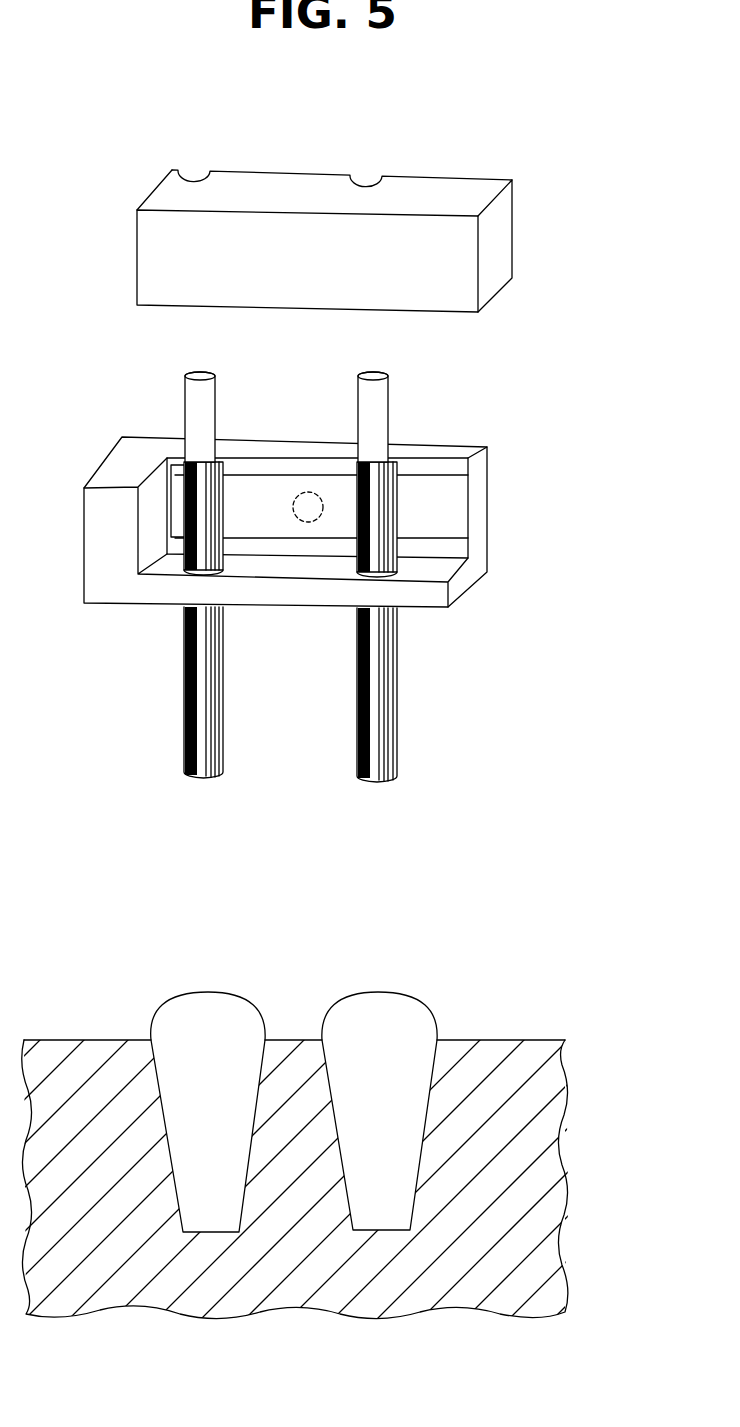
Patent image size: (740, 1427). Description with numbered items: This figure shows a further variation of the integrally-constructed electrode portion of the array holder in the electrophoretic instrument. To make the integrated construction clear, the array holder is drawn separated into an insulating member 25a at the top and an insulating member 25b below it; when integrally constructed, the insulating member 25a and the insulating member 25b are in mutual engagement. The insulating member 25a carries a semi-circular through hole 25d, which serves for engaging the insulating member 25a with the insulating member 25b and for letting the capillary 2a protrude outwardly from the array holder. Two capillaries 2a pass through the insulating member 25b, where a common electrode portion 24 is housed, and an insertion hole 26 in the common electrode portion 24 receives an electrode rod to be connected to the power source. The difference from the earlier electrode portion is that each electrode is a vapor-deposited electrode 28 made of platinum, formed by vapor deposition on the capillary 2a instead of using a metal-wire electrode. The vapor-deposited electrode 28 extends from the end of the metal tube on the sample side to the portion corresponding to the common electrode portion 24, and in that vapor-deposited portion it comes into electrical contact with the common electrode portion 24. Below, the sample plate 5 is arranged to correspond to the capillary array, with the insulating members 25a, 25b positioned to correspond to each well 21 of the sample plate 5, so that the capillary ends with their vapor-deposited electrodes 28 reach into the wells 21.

The insulating member 25a is at (372, 211).
The semi-circular through hole 25d is at (365, 185).
The insulating member 25b is at (467, 459).
The common electrode portion 24 is at (356, 538).
The insertion hole 26 is at (313, 503).
The capillary 2a is at (388, 393).
The vapor-deposited electrode 28 is at (383, 712).
The sample plate 5 is at (370, 1145).
The well 21 is at (424, 1157).